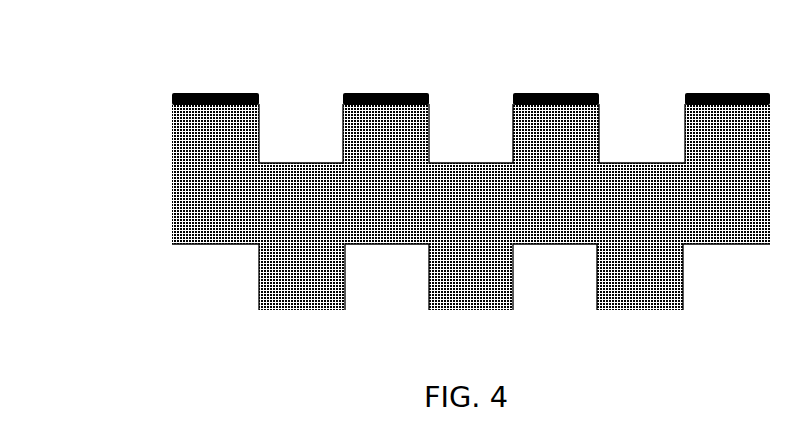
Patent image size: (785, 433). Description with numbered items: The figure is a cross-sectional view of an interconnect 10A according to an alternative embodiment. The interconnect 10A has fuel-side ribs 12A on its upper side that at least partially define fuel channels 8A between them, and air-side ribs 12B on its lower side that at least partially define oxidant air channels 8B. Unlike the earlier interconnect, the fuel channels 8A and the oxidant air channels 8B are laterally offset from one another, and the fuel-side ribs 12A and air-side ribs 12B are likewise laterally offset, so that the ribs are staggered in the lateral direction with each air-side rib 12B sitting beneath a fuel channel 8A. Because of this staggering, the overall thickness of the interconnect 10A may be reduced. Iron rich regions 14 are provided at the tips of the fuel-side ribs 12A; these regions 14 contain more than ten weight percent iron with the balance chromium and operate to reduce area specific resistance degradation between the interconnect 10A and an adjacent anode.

The interconnect 10A is at (124, 148).
The fuel-side ribs 12A is at (196, 146).
The fuel channels 8A is at (289, 146).
The air-side ribs 12B is at (284, 288).
The oxidant air channels 8B is at (197, 288).
The iron rich regions 14 is at (407, 84).